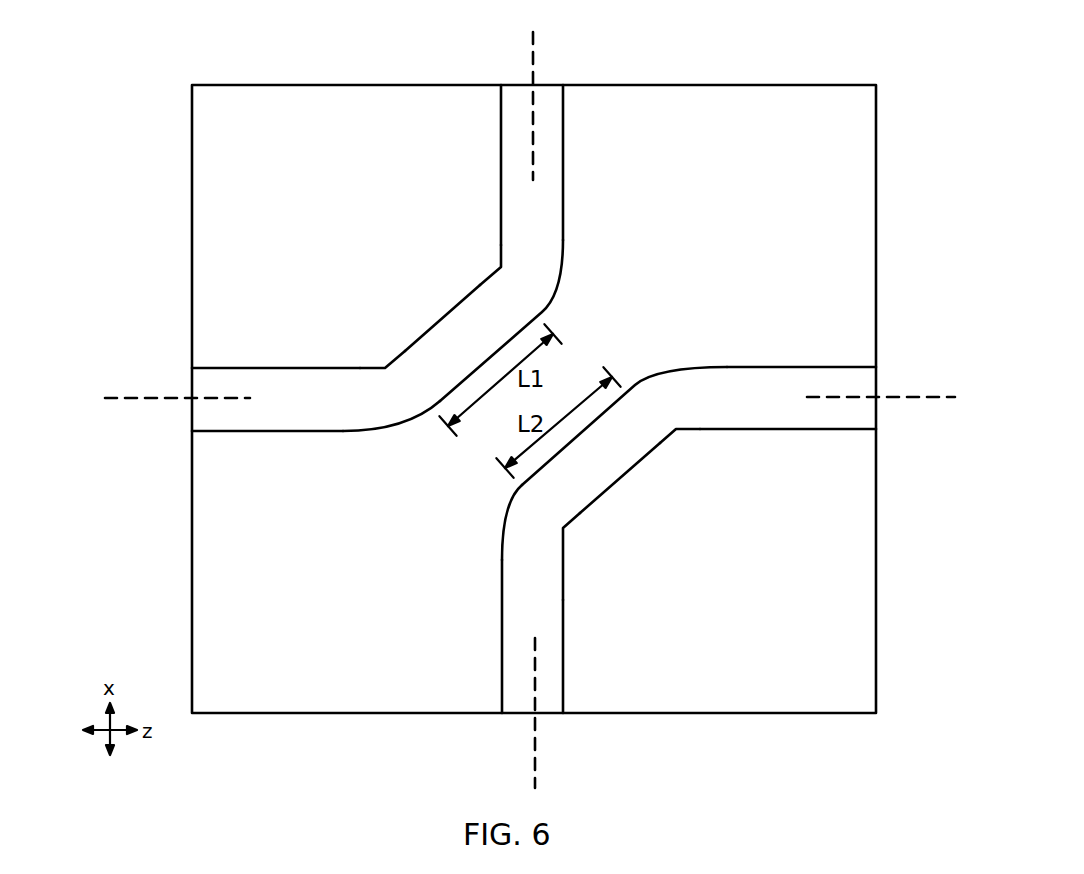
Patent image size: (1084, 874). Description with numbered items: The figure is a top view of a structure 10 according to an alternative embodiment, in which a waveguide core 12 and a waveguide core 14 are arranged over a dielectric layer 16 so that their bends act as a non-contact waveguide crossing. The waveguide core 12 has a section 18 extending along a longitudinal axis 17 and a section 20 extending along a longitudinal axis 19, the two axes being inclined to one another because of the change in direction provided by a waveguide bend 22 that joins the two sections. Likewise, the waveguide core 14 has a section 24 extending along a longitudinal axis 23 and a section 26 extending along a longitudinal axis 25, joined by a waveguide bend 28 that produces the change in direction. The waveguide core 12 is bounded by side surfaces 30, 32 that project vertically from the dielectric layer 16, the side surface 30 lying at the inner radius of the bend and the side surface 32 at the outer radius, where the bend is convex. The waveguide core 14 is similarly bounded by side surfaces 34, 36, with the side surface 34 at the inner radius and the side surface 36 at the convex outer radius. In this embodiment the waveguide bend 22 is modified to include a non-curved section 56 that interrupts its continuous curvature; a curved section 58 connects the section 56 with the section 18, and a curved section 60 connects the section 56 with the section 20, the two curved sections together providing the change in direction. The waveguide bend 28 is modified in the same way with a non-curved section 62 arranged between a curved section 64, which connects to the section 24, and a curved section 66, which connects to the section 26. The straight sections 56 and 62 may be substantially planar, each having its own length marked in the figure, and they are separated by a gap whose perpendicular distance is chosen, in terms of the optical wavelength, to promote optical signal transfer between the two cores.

The structure 10 is at (138, 77).
The waveguide core 12 is at (328, 253).
The waveguide core 14 is at (735, 613).
The dielectric layer 16 is at (860, 183).
The longitudinal axis 17 is at (120, 397).
The section 18 is at (272, 418).
The longitudinal axis 19 is at (532, 57).
The section 20 is at (553, 156).
The waveguide bend 22 is at (430, 323).
The longitudinal axis 23 is at (535, 755).
The section 24 is at (522, 663).
The longitudinal axis 25 is at (900, 398).
The section 26 is at (773, 385).
The waveguide bend 28 is at (640, 475).
The side surface 30 is at (305, 368).
The side surface 32 is at (343, 432).
The side surface 34 is at (565, 618).
The side surface 36 is at (500, 567).
The section 56 is at (460, 333).
The curved section 58 is at (372, 400).
The curved section 60 is at (522, 250).
The section 62 is at (595, 482).
The curved section 64 is at (547, 537).
The curved section 66 is at (693, 415).